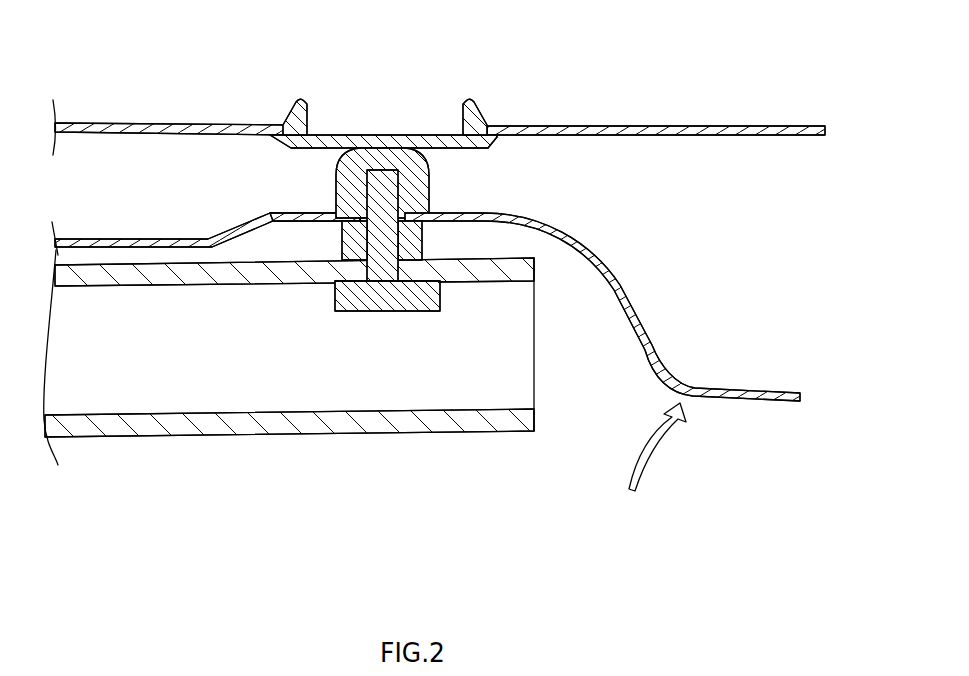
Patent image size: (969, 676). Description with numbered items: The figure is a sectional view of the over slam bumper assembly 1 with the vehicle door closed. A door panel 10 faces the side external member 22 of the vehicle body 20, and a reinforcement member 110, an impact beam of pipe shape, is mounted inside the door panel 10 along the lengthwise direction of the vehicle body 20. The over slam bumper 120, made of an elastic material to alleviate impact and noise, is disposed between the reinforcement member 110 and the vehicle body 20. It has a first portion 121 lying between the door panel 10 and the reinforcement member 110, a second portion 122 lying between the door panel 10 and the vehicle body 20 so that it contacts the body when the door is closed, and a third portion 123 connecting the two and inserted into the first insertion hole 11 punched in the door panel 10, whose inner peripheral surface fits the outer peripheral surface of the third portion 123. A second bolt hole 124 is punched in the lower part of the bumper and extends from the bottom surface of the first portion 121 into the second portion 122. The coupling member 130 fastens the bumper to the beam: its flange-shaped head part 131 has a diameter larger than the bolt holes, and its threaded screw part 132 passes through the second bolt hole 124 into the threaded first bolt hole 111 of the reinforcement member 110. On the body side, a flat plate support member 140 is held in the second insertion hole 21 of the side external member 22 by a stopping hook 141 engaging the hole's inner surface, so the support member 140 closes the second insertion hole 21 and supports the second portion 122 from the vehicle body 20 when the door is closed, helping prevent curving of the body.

The over slam bumper assembly 1 is at (222, 170).
The door panel 10 is at (228, 206).
The first insertion hole 11 is at (373, 252).
The vehicle body 20 is at (439, 94).
The second insertion hole 21 is at (497, 127).
The side external member 22 is at (622, 130).
The reinforcement member 110 is at (310, 427).
The first bolt hole 111 is at (418, 300).
The over slam bumper 120 is at (568, 271).
The first portion 121 is at (413, 243).
The second portion 122 is at (427, 170).
The third portion 123 is at (405, 199).
The second bolt hole 124 is at (340, 216).
The coupling member 130 is at (328, 296).
The head part 131 is at (352, 303).
The screw part 132 is at (340, 283).
The support member 140 is at (383, 84).
The stopping hook 141 is at (468, 103).